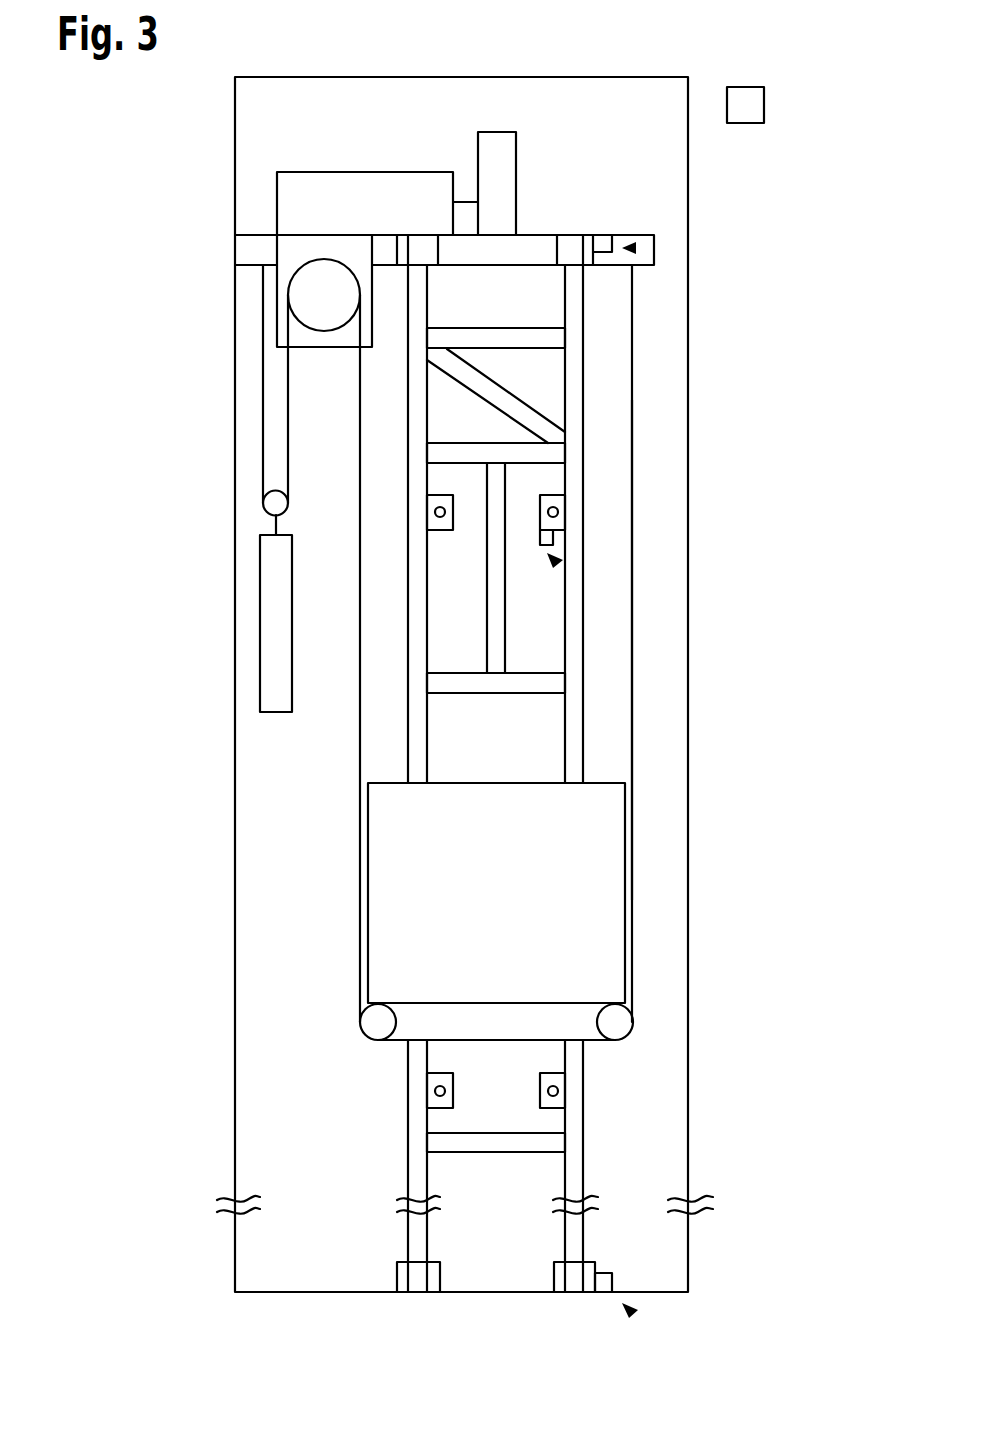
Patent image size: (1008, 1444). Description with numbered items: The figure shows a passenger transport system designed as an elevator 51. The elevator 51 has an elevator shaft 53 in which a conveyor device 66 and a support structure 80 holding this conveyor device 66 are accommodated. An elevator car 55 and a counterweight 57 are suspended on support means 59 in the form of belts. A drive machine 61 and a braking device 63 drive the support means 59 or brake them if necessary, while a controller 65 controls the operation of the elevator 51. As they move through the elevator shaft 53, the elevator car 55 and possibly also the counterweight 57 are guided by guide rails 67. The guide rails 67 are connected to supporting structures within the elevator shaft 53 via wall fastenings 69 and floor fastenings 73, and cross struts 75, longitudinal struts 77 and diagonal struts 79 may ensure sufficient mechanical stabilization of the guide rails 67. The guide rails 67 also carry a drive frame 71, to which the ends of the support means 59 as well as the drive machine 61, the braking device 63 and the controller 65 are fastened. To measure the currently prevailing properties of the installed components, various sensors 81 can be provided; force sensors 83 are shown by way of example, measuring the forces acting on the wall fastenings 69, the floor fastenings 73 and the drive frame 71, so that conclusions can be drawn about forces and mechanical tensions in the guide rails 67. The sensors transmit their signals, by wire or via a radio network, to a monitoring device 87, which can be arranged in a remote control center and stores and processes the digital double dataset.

The elevator 51 is at (226, 210).
The elevator shaft 53 is at (279, 1242).
The elevator car 55 is at (398, 913).
The counterweight 57 is at (273, 637).
The support means 59 is at (358, 565).
The drive machine 61 is at (322, 352).
The braking device 63 is at (377, 170).
The controller 65 is at (497, 132).
The conveyor device 66 is at (327, 694).
The guide rails 67 is at (415, 612).
The wall fastenings 69 is at (560, 503).
The drive frame 71 is at (562, 235).
The floor fastenings 73 is at (560, 1292).
The cross struts 75 is at (513, 452).
The longitudinal struts 77 is at (497, 623).
The diagonal struts 79 is at (495, 393).
The support structure 80 is at (612, 680).
The sensors 81 is at (634, 248).
The force sensors 83 is at (604, 235).
The monitoring device 87 is at (786, 107).